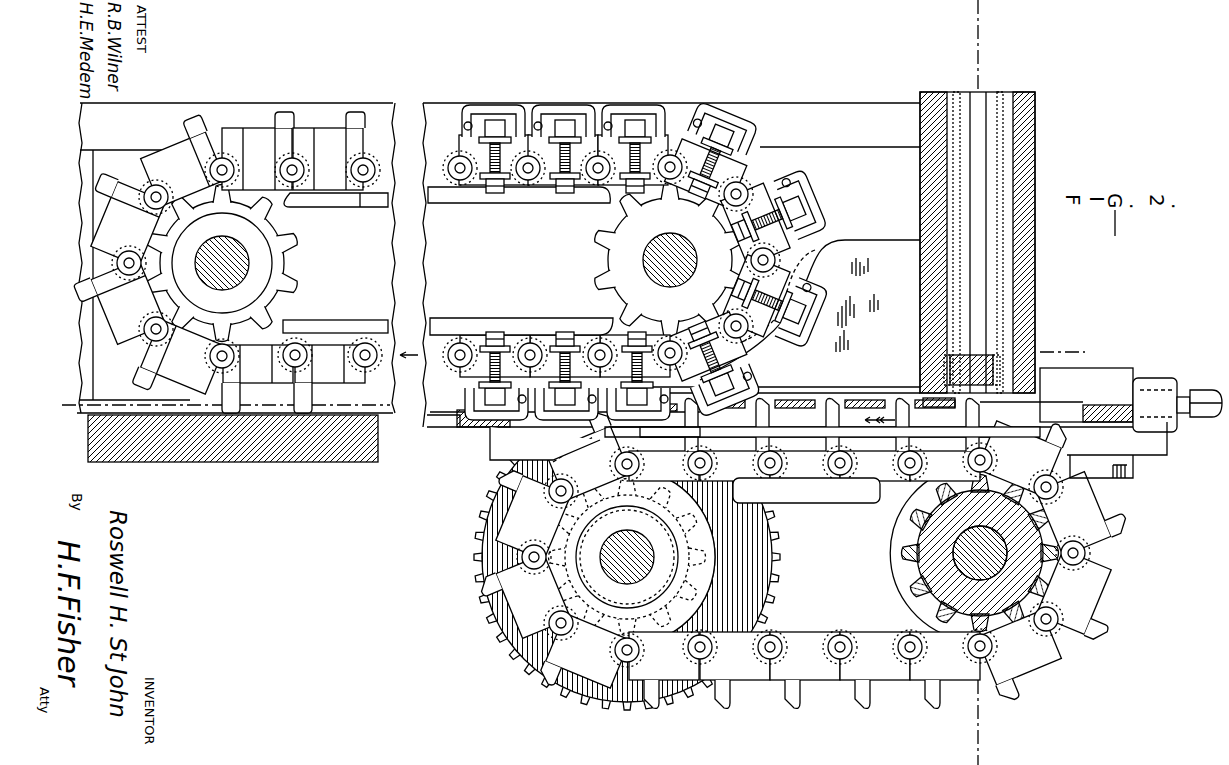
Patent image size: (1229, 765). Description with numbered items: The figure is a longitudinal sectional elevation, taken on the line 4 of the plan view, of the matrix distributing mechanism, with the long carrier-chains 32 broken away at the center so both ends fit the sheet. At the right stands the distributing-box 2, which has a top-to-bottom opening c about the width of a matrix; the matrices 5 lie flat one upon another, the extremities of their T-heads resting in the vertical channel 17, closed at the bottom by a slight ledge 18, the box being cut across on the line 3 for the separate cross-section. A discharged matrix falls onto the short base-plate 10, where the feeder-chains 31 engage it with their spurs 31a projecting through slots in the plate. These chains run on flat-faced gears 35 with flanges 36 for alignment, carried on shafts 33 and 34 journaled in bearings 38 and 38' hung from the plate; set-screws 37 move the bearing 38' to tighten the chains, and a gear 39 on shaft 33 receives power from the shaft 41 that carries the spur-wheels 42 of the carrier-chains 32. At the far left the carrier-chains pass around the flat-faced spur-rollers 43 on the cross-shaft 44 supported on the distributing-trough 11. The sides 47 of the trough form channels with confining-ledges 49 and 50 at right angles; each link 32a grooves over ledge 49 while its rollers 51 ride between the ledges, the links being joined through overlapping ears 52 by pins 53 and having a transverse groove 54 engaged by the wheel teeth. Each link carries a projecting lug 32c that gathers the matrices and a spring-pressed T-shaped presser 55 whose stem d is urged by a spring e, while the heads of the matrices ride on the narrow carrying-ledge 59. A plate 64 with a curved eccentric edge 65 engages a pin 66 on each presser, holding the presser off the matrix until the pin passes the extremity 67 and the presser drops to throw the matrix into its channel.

The distributing-box 2 is at (1025, 92).
The section line 3 is at (978, 382).
The section line 4 is at (585, 378).
The matrices 5 is at (790, 400).
The base-plate 10 is at (1097, 405).
The distributing-trough 11 is at (320, 462).
The vertical channel 17 is at (935, 180).
The ledge 18 is at (995, 393).
The feeder-chains 31 is at (1115, 565).
The engaging spurs 31a is at (835, 396).
The carrier-chains 32 is at (415, 128).
The link 32a is at (322, 126).
The projecting lug 32c is at (470, 110).
The shaft 33 is at (627, 545).
The shaft 34 is at (950, 565).
The flat-faced gears 35 is at (702, 596).
The flanges 36 is at (716, 550).
The set-screws 37 is at (1196, 418).
The bearing 38 is at (524, 453).
The bearing 38' is at (1118, 451).
The gear 39 is at (778, 550).
The shaft 41 is at (650, 250).
The spur-wheels 42 is at (600, 256).
The flat-faced spur-rollers 43 is at (300, 263).
The cross-shaft 44 is at (250, 263).
The sides 47 is at (780, 292).
The confining-ledge 49 is at (236, 258).
The confining-ledge 50 is at (452, 200).
The rollers 51 is at (538, 192).
The overlapping ears 52 is at (363, 192).
The pins 53 is at (500, 196).
The central transverse groove 54 is at (326, 200).
The spring-pressed T-shaped presser 55 is at (650, 106).
The carrying-ledge 59 is at (432, 428).
The plate 64 is at (870, 250).
The curved edge 65 is at (806, 268).
The pin 66 is at (800, 186).
The extremity 67 is at (660, 427).
The opening c is at (985, 135).
The stem d is at (655, 117).
The spring e is at (600, 165).